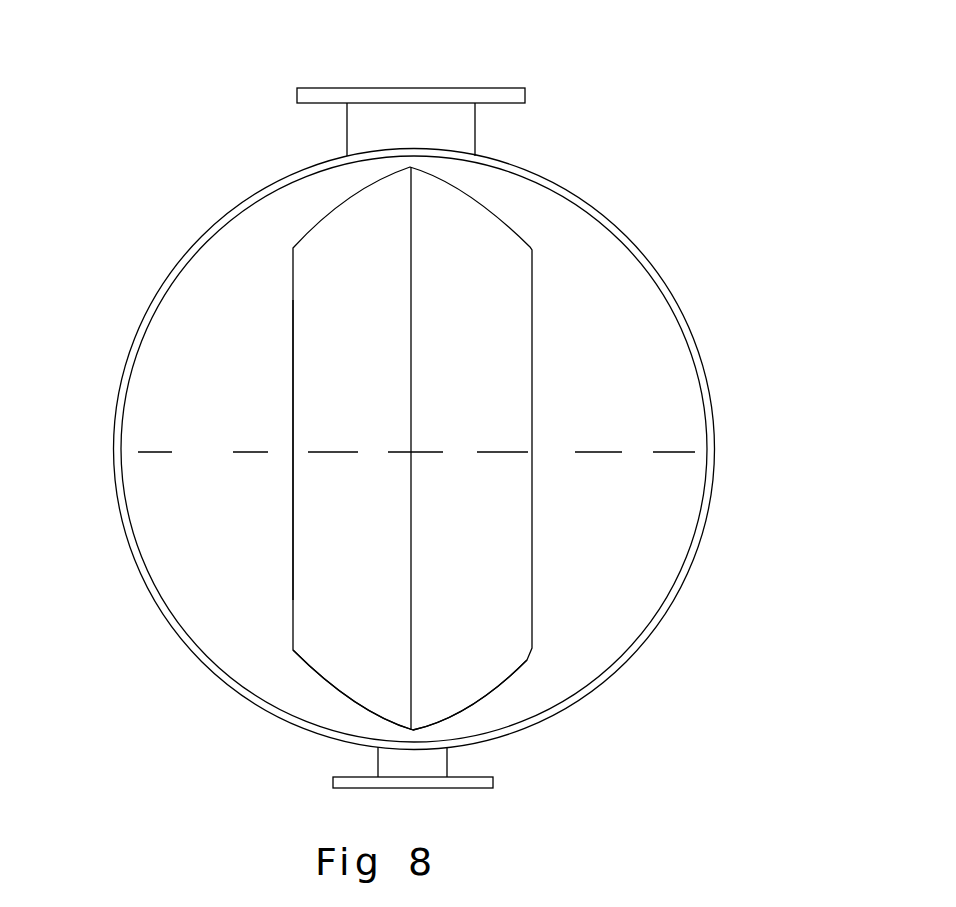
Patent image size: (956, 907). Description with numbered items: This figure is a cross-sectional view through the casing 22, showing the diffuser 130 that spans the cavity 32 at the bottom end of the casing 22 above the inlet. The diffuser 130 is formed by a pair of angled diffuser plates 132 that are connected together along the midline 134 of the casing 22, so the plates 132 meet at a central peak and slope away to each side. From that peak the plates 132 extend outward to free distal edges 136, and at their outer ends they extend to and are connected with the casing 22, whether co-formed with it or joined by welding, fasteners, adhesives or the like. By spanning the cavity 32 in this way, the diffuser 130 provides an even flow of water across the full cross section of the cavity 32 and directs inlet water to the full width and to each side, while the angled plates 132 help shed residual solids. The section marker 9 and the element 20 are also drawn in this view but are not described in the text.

The section line 9- 9 is at (113, 452).
The port flange 20 is at (503, 87).
The vessel outer wall 22 is at (695, 337).
The vessel inner wall 32 is at (615, 312).
The insert body 130 is at (512, 272).
The lower left wall of insert 132 is at (338, 640).
The lower right wall of insert 134 is at (413, 647).
The chamber 136 is at (293, 535).